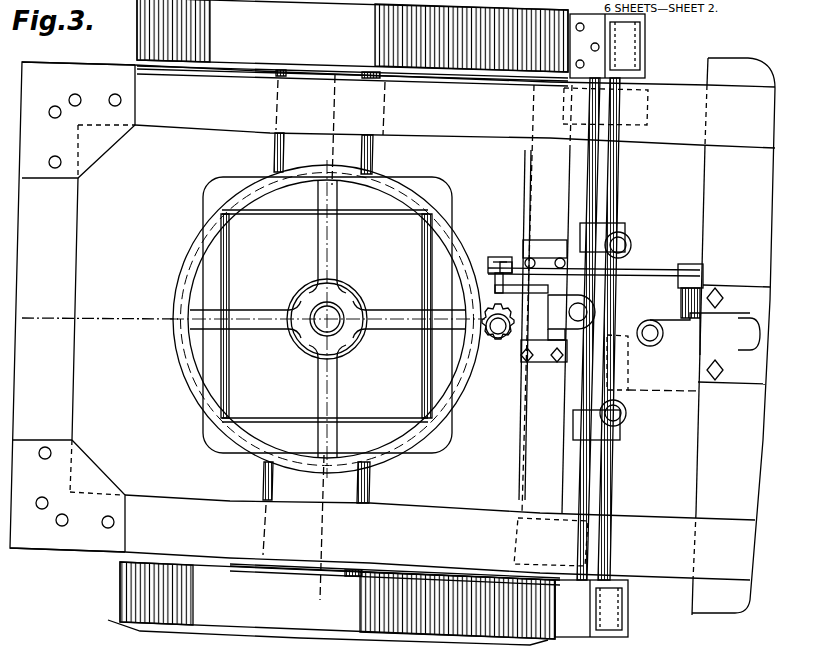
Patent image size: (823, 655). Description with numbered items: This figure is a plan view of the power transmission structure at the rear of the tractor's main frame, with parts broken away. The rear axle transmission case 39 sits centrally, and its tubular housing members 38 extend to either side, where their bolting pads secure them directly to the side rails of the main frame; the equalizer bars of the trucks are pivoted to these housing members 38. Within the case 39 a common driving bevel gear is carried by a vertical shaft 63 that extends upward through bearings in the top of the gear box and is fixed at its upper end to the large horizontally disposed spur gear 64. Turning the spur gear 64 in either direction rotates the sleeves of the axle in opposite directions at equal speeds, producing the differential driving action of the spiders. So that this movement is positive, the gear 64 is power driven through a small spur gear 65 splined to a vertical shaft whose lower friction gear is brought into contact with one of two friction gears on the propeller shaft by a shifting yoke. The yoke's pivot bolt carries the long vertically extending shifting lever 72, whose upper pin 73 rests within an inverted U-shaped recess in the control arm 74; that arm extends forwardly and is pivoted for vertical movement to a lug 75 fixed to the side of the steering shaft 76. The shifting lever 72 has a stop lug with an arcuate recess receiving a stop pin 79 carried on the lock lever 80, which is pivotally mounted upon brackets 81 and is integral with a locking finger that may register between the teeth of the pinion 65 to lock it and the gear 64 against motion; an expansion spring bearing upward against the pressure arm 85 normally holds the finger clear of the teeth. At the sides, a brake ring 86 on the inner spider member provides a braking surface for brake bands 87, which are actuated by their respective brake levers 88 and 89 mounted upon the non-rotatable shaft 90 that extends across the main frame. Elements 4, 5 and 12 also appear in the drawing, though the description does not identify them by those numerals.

The main frame 4 is at (392, 336).
The roller frame bar 5 is at (352, 340).
The side frame plate 12 is at (392, 321).
The housing member 38 is at (336, 337).
The rear axle transmission case 39 is at (327, 315).
The vertical shaft 63 is at (312, 316).
The spur gear 64 is at (320, 319).
The spur gear 65 is at (495, 353).
The shifting lever 72 is at (510, 253).
The pin 73 is at (489, 253).
The control arm 74 is at (594, 265).
The lug 75 is at (689, 322).
The steering shaft 76 is at (698, 343).
The stop pin 79 is at (492, 289).
The lock lever 80 is at (567, 312).
The bracket 81 is at (544, 312).
The pressure arm 85 is at (567, 346).
The brake ring 86 is at (352, 327).
The brake band 87 is at (338, 322).
The brake lever 88 is at (611, 434).
The brake lever 89 is at (618, 240).
The non-rotatable shaft 90 is at (628, 380).